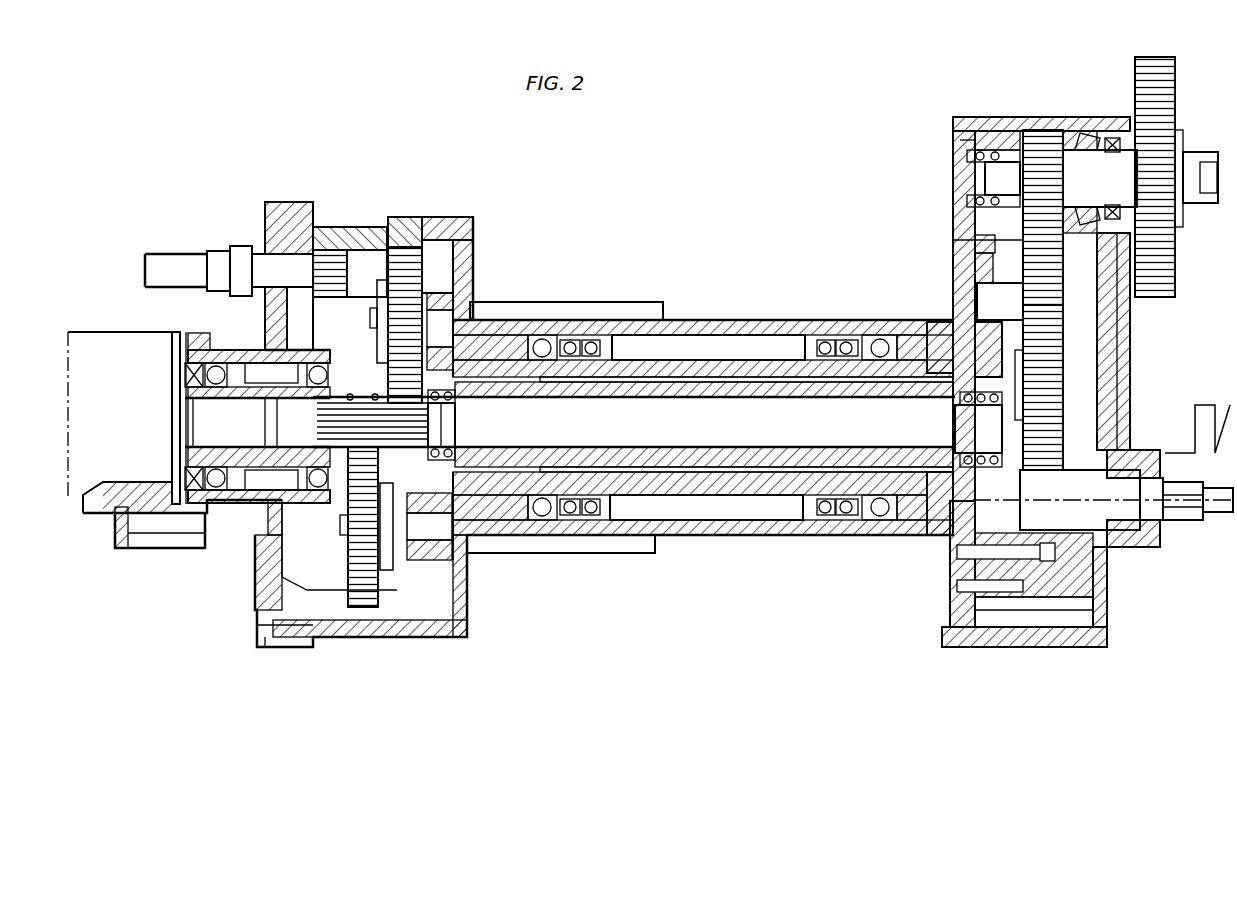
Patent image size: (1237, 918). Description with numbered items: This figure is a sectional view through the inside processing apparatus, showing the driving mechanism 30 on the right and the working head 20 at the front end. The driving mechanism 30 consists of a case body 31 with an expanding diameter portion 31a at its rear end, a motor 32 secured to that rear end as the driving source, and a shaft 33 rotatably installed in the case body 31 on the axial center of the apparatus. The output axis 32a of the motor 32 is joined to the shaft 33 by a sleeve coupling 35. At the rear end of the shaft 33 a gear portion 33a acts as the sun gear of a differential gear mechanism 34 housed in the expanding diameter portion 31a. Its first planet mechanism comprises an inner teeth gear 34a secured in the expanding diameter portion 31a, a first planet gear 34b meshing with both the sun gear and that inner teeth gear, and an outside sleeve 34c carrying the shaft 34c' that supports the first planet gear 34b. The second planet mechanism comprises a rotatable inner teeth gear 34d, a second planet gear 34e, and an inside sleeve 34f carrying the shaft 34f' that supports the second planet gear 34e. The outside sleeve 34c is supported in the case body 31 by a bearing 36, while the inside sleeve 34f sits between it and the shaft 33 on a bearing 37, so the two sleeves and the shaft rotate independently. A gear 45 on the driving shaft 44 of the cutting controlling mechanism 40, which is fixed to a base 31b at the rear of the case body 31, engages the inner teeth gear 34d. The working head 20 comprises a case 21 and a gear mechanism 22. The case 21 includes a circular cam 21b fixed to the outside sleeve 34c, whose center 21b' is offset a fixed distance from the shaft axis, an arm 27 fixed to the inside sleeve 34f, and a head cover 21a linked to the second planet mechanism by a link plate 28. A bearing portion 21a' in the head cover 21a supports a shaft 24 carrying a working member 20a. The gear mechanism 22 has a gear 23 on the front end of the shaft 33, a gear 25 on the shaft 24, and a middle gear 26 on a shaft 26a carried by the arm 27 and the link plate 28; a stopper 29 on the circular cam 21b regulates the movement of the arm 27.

The working head 20 is at (1183, 272).
The working member 20a is at (1157, 63).
The case 21 is at (1010, 648).
The head cover 21a is at (1011, 407).
The bearing portion 21a' is at (990, 139).
The circular cam 21b is at (929, 564).
The center 21b' is at (1139, 390).
The gear mechanism 22 is at (1077, 339).
The gear 23 is at (1052, 428).
The shaft 24 is at (1085, 173).
The gear 25 is at (1040, 140).
The middle gear 26 is at (1063, 362).
The shaft 26a is at (993, 307).
The arm 27 is at (985, 340).
The link plate 28 is at (973, 247).
The stopper 29 is at (1098, 577).
The driving mechanism 30 is at (684, 316).
The case body 31 is at (720, 320).
The expanding diameter portion 31a is at (448, 217).
The base 31b is at (273, 208).
The motor 32 is at (110, 340).
The output axis 32a is at (195, 427).
The shaft 33 is at (758, 417).
The gear portion 33a is at (363, 413).
The differential gear mechanism 34 is at (430, 283).
The inner teeth gear 34a is at (405, 233).
The first planet gear 34b is at (433, 262).
The outside sleeve 34c is at (703, 377).
The shaft 34c' is at (353, 321).
The inner teeth gear 34d is at (337, 233).
The second planet gear 34e is at (362, 613).
The inside sleeve 34f is at (704, 371).
The shaft 34f' is at (461, 552).
The sleeve coupling 35 is at (255, 448).
The bearing 36 is at (546, 335).
The bearing 37 is at (455, 433).
The cutting controlling mechanism 40 is at (176, 252).
The driving shaft 44 is at (262, 262).
The gear 45 is at (343, 292).